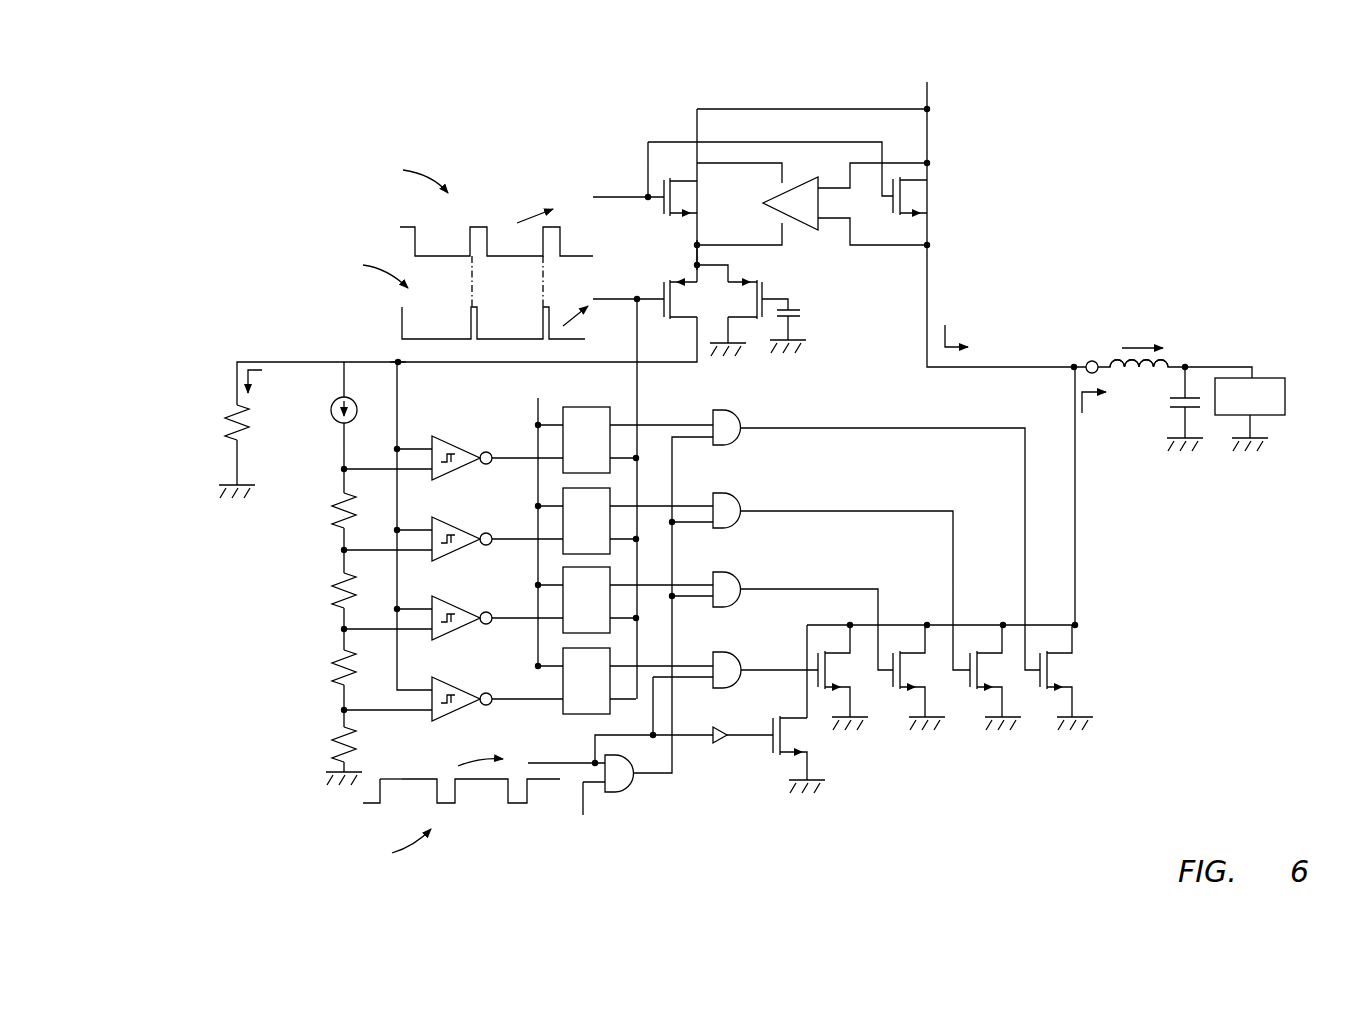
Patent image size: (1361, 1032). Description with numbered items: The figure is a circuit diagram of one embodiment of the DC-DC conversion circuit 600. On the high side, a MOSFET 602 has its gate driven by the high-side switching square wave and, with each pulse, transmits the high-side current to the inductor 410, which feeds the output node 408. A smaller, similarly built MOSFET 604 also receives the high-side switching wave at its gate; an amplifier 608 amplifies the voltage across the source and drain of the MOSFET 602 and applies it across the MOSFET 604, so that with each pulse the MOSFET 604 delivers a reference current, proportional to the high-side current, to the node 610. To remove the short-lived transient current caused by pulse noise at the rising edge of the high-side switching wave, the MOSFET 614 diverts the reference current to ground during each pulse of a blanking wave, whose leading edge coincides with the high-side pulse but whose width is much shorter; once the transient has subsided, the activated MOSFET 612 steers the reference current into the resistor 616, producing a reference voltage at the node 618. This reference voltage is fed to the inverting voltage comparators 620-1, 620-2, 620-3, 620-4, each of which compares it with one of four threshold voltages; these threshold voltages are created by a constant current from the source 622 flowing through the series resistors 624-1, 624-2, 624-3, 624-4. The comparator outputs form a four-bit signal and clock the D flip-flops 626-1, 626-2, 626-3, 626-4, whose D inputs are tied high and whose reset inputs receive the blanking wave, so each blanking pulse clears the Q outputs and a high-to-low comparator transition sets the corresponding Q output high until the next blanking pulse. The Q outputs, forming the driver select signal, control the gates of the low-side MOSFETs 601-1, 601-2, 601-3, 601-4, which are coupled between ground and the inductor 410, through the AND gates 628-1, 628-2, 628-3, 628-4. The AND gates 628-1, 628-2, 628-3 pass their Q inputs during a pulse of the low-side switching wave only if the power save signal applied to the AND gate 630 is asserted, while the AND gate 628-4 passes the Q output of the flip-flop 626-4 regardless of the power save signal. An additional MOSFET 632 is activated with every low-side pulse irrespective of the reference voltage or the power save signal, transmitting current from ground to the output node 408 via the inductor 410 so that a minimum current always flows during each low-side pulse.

The DC-DC conversion circuit 600 is at (1162, 99).
The MOSFET 602 is at (914, 212).
The MOSFET 604 is at (692, 184).
The amplifier 608 is at (784, 224).
The node 610 is at (696, 258).
The MOSFET 612 is at (663, 289).
The MOSFET 614 is at (764, 289).
The resistor 616 is at (226, 415).
The node 618 is at (401, 366).
The source 622 is at (344, 401).
The resistor 624-1 is at (335, 515).
The resistor 624-2 is at (335, 585).
The resistor 624-3 is at (335, 662).
The resistor 624-4 is at (335, 745).
The inverting voltage comparator 620-1 is at (458, 434).
The inverting voltage comparator 620-2 is at (458, 515).
The inverting voltage comparator 620-3 is at (458, 594).
The inverting voltage comparator 620-4 is at (452, 681).
The D flip-flop 626-1 is at (593, 395).
The D flip-flop 626-2 is at (563, 495).
The D flip-flop 626-3 is at (563, 573).
The D flip-flop 626-4 is at (562, 657).
The AND gate 628-1 is at (740, 415).
The AND gate 628-2 is at (740, 498).
The AND gate 628-3 is at (740, 577).
The AND gate 628-4 is at (728, 653).
The AND gate 630 is at (641, 788).
The MOSFET 632 is at (795, 713).
The MOSFET 601-1 is at (1076, 692).
The MOSFET 601-2 is at (1004, 692).
The MOSFET 601-3 is at (928, 692).
The MOSFET 601-4 is at (851, 692).
The inductor 410 is at (1170, 360).
The output node 408 is at (1263, 378).